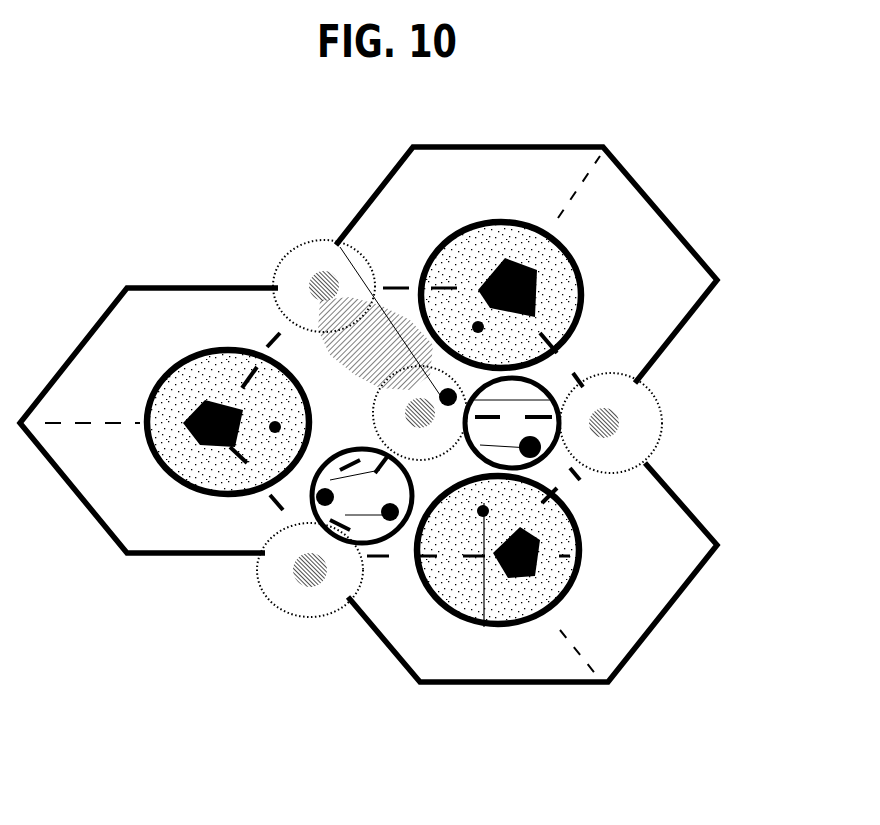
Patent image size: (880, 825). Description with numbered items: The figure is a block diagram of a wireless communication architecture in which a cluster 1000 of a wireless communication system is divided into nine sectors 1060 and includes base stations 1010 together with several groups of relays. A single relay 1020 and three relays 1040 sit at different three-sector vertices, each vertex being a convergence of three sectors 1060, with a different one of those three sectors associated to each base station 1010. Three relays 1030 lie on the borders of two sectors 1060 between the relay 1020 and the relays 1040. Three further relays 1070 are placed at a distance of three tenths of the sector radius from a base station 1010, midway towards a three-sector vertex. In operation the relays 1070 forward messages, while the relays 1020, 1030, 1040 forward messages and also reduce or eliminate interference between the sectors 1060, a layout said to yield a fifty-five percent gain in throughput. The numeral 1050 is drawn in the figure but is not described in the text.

The cluster 1000 is at (727, 104).
The base station 1010 is at (173, 360).
The relay 1020 is at (332, 245).
The relay 1030 is at (350, 597).
The relay 1040 is at (605, 423).
The electrical conductor subunit 1050 is at (548, 457).
The sector 1060 is at (480, 198).
The relay 1070 is at (478, 327).